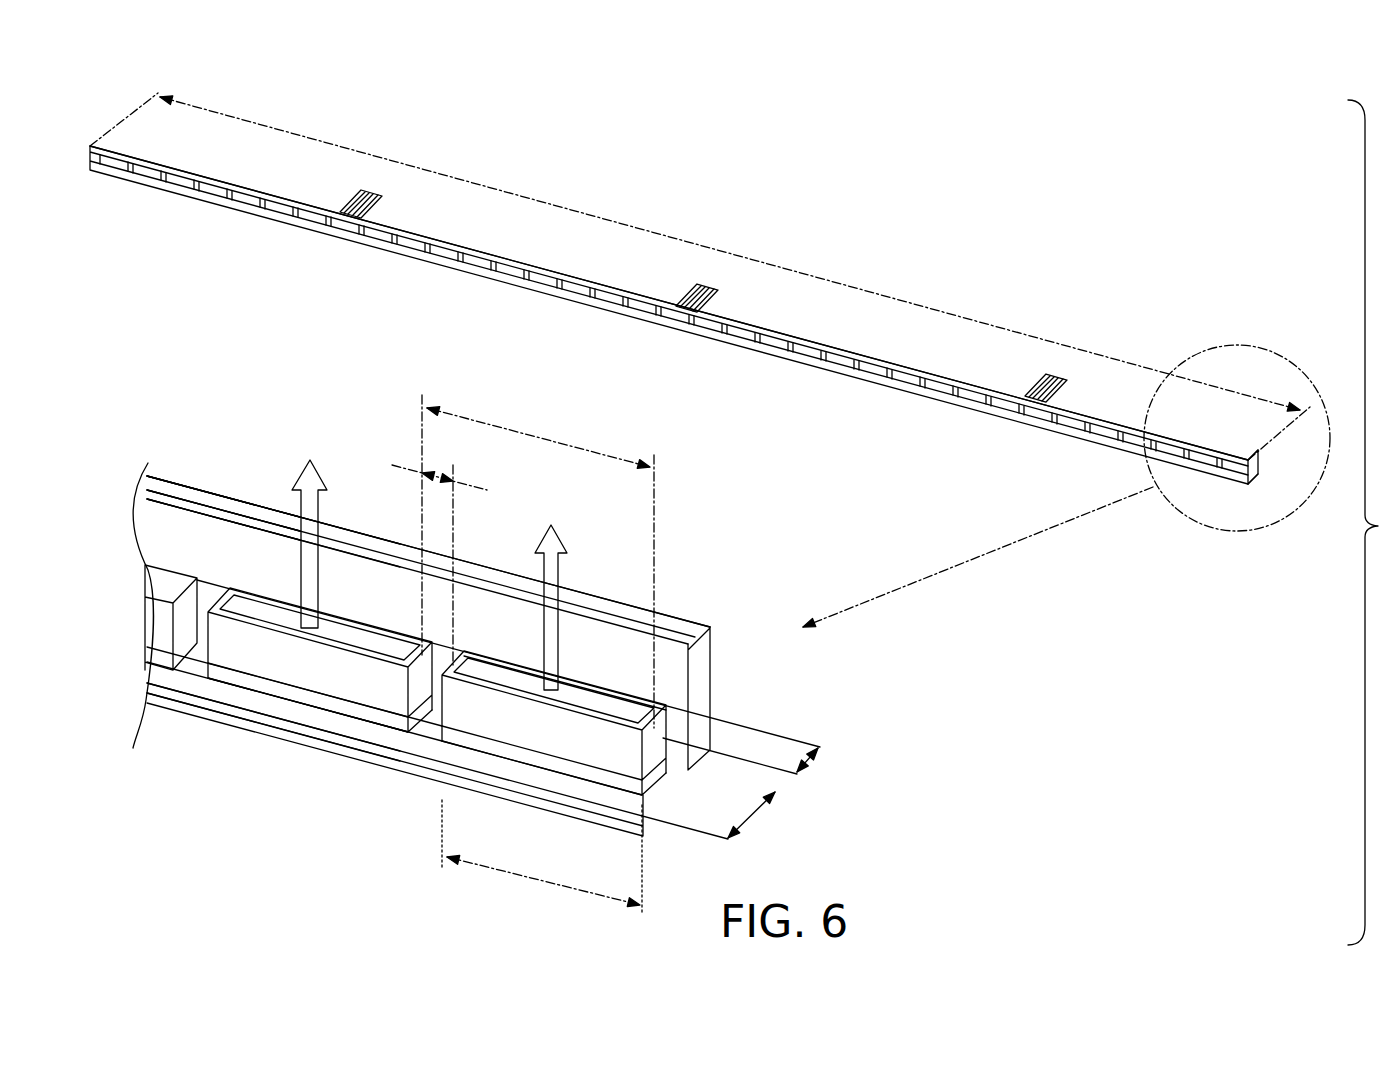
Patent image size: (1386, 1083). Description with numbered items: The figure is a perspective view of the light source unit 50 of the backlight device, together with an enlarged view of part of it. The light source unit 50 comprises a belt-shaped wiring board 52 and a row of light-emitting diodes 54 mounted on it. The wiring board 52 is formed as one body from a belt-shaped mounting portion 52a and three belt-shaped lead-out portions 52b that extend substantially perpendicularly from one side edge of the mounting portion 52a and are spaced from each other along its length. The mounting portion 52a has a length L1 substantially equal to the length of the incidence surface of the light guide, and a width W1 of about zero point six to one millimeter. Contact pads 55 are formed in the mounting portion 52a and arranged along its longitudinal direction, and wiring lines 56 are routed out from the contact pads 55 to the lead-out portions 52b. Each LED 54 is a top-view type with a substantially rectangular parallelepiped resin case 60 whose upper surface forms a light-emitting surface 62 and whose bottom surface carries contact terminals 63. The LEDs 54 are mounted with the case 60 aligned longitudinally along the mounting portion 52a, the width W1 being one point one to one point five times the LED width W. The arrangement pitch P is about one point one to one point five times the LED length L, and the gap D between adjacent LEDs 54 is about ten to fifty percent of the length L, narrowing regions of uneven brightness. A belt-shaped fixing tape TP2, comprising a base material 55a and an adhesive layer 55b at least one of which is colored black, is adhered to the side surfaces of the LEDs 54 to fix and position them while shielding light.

The light source unit 50 is at (683, 353).
The wiring board 52 is at (837, 370).
The mounting portion 52a is at (906, 393).
The lead-out portions 52b is at (372, 187).
The light-emitting diodes 54 is at (1100, 441).
The contact pads 55 is at (215, 684).
The base material 55a is at (165, 480).
The adhesive layer 55b is at (179, 503).
The wiring lines 56 is at (366, 220).
The case 60 is at (678, 735).
The light-emitting surface 62 is at (362, 636).
The contact terminals 63 is at (250, 696).
The fixing tape TP2 is at (973, 383).
The length of the mounting portion L1 is at (700, 276).
The arrangement pitch P is at (538, 561).
The gap D is at (439, 557).
The width of the LED W is at (821, 765).
The width of the mounting portion W1 is at (764, 816).
The length of the LED L is at (542, 856).